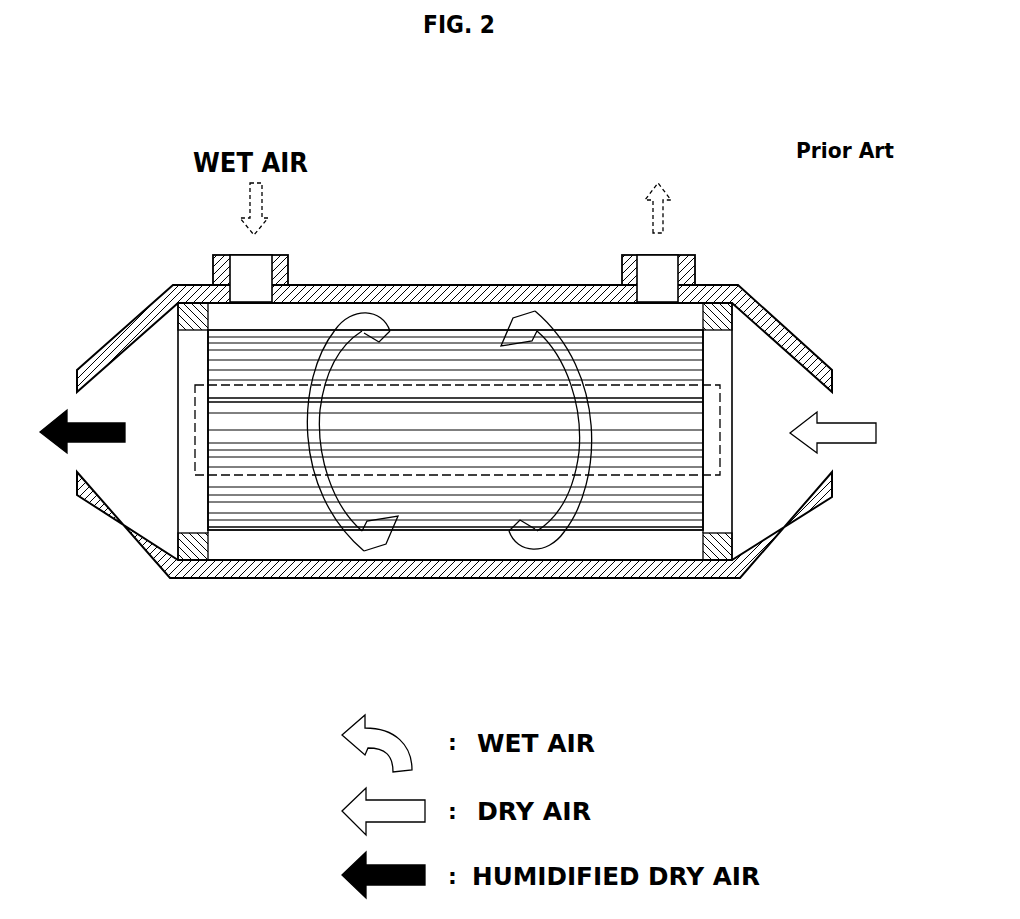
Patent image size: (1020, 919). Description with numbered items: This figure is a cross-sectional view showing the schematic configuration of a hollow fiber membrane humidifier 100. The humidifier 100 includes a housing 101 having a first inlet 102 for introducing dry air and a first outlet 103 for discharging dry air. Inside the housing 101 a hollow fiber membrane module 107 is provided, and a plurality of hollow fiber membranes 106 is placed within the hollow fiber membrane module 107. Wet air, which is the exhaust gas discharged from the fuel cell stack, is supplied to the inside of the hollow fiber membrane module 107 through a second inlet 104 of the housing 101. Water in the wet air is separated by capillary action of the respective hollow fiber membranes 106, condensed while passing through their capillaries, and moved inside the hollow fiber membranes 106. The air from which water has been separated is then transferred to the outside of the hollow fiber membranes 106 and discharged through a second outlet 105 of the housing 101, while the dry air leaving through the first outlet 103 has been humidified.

The humidifier 100 is at (545, 181).
The housing 101 is at (358, 578).
The first inlet 102 is at (732, 367).
The first outlet 103 is at (178, 365).
The second inlet 104 is at (258, 257).
The second outlet 105 is at (660, 257).
The hollow fiber membranes 106 is at (300, 502).
The hollow fiber membrane module 107 is at (490, 533).